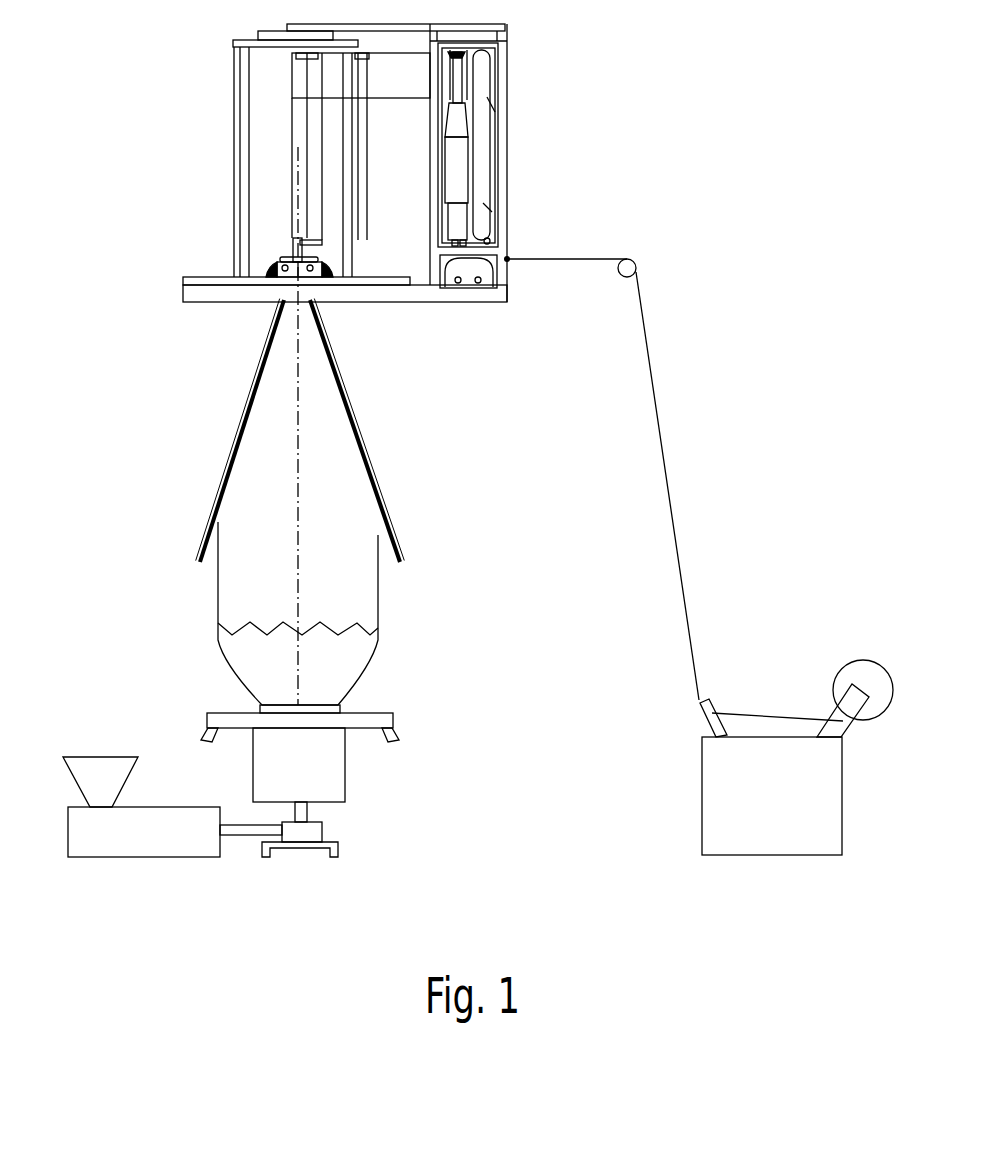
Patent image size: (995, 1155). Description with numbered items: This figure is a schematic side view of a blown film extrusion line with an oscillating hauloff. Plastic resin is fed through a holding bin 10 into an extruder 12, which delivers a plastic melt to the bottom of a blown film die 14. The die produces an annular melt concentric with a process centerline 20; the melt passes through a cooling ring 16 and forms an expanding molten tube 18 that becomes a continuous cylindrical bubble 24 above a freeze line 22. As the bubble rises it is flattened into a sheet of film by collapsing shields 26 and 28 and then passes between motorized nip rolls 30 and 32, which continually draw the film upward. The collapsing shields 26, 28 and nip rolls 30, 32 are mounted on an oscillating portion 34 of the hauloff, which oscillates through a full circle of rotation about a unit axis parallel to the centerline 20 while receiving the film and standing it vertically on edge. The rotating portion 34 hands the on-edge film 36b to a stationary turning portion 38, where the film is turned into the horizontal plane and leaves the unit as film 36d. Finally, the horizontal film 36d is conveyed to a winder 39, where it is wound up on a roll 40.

The holding bin 10 is at (71, 766).
The extruder 12 is at (175, 851).
The blown film die 14 is at (345, 792).
The cooling ring 16 is at (333, 716).
The expanding molten tube 18 is at (265, 670).
The process centerline 20 is at (363, 426).
The freeze line 22 is at (342, 607).
The continuous cylindrical bubble 24 is at (250, 575).
The collapsing shield 26 is at (209, 430).
The collapsing shield 28 is at (384, 431).
The motorized nip roll 30 is at (244, 292).
The motorized nip roll 32 is at (370, 304).
The oscillating portion 34 is at (296, 163).
The on-edge film 36b is at (277, 165).
The film 36d is at (604, 460).
The stationary turning portion 38 is at (546, 165).
The winder 39 is at (729, 777).
The roll 40 is at (830, 686).